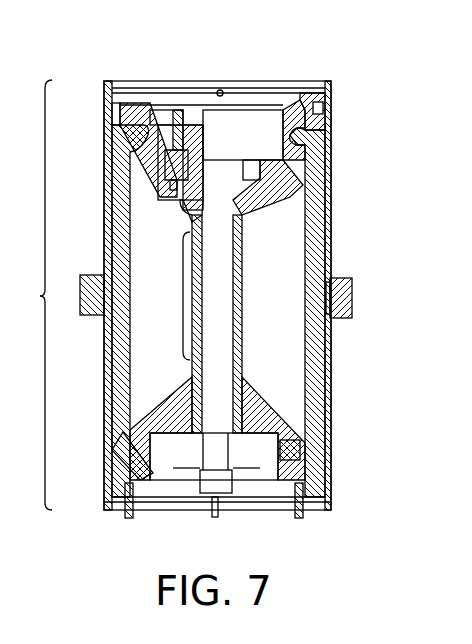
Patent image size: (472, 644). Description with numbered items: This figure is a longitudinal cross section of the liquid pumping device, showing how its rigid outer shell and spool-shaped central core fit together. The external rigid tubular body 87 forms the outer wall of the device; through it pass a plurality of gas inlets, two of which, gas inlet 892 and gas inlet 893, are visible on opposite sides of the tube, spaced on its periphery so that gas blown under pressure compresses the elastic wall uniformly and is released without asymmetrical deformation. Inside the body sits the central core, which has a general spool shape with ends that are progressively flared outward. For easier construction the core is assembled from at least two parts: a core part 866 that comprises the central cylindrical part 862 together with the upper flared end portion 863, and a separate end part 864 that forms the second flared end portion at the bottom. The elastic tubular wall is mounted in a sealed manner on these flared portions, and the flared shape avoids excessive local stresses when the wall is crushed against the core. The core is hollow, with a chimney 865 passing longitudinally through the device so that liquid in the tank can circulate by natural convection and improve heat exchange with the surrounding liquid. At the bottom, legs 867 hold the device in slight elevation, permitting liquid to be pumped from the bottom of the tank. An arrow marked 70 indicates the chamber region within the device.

The external rigid tubular body 87 is at (332, 139).
The core part 866 is at (26, 295).
The flared end portion 863 is at (128, 168).
The gas inlet 893 is at (102, 275).
The gas inlet 892 is at (322, 290).
The central cylindrical part 862 is at (174, 297).
The chimney 865 is at (233, 355).
The chamber 70 is at (145, 334).
The end part 864 is at (135, 420).
The legs 867 is at (130, 518).